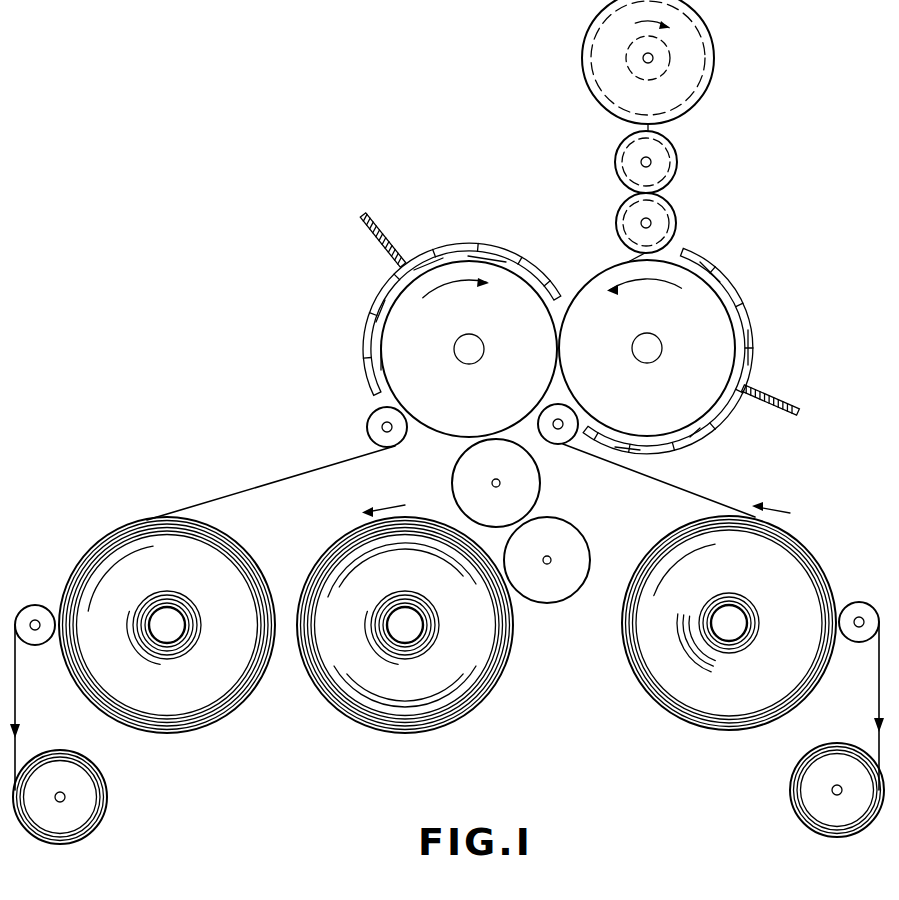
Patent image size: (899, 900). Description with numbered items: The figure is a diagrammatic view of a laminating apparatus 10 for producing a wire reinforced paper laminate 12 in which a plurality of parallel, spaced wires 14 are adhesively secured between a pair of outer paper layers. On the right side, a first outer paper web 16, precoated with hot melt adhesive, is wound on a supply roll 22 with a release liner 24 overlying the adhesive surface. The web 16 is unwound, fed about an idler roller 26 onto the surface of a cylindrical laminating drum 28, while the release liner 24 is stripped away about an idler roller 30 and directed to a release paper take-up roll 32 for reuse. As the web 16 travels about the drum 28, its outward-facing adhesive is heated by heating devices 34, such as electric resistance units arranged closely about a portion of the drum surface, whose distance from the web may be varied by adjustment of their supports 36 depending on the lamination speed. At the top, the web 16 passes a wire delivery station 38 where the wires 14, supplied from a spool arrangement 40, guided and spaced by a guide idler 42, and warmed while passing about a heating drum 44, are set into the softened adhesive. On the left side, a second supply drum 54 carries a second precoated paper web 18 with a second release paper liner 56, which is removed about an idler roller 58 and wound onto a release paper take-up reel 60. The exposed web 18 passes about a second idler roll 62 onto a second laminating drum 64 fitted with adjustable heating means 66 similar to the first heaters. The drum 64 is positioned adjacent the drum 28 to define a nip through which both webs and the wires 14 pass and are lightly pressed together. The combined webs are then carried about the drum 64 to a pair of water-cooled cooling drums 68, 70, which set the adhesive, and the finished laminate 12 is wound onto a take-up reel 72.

The laminating apparatus 10 is at (332, 318).
The wire reinforced paper laminate 12 is at (528, 510).
The wires 14 is at (650, 129).
The first outer paper web 16 is at (688, 490).
The second paper web 18 is at (280, 445).
The supply roll 22 is at (662, 682).
The release liner 24 is at (879, 685).
The idler roller 26 is at (563, 440).
The laminating drum 28 is at (705, 353).
The idler roller 30 is at (866, 610).
The release paper take-up roll 32 is at (808, 766).
The heating devices 34 is at (716, 272).
The supports 36 is at (772, 386).
The wire delivery station 38 is at (598, 133).
The spool arrangement 40 is at (712, 72).
The guide idler 42 is at (677, 163).
The heating drum 44 is at (672, 218).
The second supply drum 54 is at (237, 692).
The second release paper liner 56 is at (16, 706).
The idler roller 58 is at (35, 606).
The release paper take-up reel 60 is at (100, 775).
The second idler roll 62 is at (377, 422).
The second laminating drum 64 is at (483, 270).
The heating means 66 is at (366, 320).
The cooling drum 68 is at (506, 474).
The cooling drum 70 is at (562, 551).
The take-up reel 72 is at (443, 697).